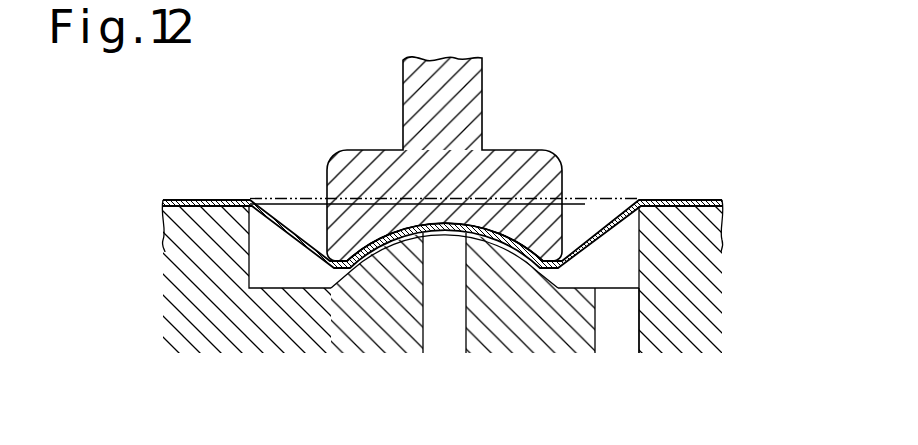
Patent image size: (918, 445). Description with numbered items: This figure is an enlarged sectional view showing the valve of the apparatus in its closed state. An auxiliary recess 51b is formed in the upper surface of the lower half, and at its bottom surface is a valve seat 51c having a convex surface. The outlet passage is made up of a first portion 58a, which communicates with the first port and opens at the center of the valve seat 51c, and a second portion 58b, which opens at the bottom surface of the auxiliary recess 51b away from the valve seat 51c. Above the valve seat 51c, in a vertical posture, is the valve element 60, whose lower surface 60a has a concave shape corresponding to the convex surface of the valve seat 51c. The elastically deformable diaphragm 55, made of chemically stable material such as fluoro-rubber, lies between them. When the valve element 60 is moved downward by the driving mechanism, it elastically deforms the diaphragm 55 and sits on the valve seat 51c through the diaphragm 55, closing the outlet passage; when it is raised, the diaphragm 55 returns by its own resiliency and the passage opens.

The diaphragm 55 is at (207, 200).
The valve element 60 is at (483, 100).
The lower surface of the valve element 60a is at (375, 255).
The valve seat 51c is at (481, 226).
The auxiliary recess 51b is at (298, 276).
The first portion of the outlet passage 58a is at (440, 323).
The second portion of the outlet passage 58b is at (613, 327).